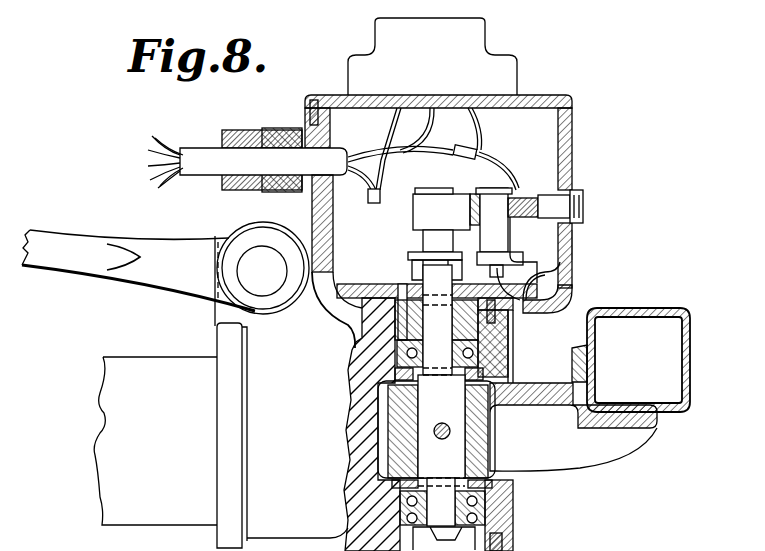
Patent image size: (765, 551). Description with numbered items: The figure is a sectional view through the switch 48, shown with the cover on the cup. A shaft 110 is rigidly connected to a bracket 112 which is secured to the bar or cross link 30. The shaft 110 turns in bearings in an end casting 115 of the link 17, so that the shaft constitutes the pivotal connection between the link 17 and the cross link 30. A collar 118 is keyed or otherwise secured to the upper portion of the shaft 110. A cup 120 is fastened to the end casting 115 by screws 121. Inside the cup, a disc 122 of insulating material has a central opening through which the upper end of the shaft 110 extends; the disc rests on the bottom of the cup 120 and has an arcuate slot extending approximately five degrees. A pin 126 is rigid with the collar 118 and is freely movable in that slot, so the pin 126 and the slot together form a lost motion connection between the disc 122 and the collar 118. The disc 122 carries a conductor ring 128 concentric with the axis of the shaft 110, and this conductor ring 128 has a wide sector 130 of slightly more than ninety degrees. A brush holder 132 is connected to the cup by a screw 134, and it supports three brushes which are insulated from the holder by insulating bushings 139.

The link 17 is at (220, 338).
The cross link 30 is at (690, 345).
The switch 48 is at (583, 240).
The shaft 110 is at (444, 407).
The bracket 112 is at (573, 427).
The end casting 115 is at (185, 380).
The collar 118 is at (502, 358).
The cup 120 is at (573, 128).
The screws 121 is at (502, 336).
The disc 122 is at (563, 263).
The pin 126 is at (405, 280).
The conductor ring 128 is at (505, 300).
The wide sector 130 is at (343, 280).
The brush holder 132 is at (426, 199).
The screw 134 is at (585, 195).
The insulating bushings 139 is at (493, 186).